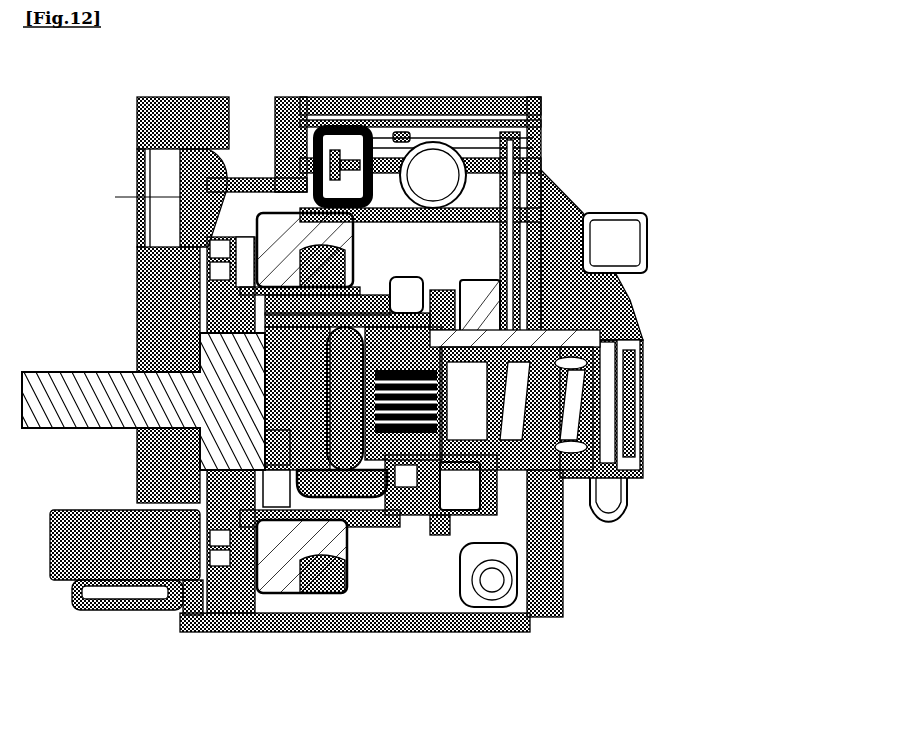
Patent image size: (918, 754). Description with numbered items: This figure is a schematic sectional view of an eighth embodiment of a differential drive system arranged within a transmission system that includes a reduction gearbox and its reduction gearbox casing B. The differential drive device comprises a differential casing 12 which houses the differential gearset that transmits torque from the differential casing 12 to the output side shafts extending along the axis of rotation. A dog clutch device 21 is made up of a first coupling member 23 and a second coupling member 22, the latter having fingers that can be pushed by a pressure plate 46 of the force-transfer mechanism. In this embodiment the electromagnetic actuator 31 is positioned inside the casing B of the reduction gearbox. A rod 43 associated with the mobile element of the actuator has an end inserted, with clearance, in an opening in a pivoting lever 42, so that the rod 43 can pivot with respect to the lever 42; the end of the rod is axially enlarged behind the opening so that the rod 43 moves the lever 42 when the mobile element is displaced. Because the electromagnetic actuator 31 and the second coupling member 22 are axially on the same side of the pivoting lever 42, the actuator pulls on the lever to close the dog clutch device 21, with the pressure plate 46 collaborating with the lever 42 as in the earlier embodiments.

The differential casing 12 is at (410, 268).
The electromagnetic actuator 31 is at (542, 122).
The rod 43 is at (647, 229).
The second coupling member 22 is at (405, 530).
The dog clutch device 21 is at (435, 483).
The reduction gearbox casing B is at (458, 530).
The first coupling member 23 is at (362, 530).
The pressure plate 46 is at (440, 530).
The pivoting lever 42 is at (518, 520).